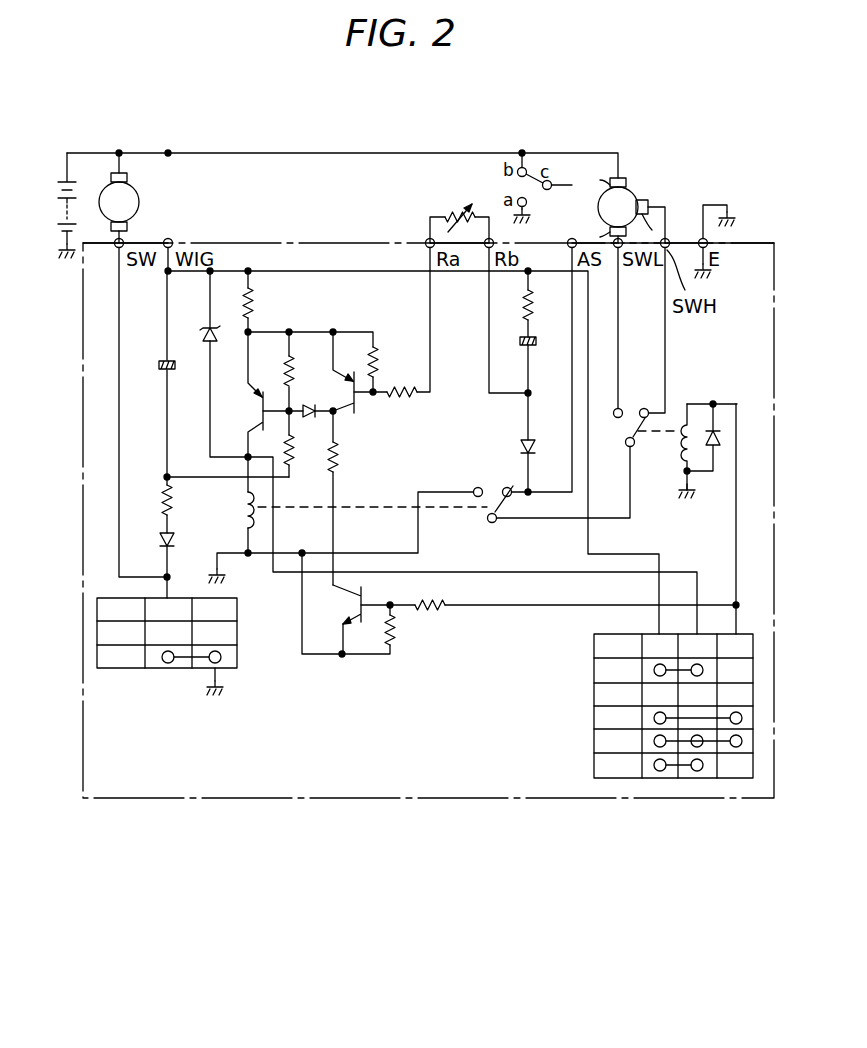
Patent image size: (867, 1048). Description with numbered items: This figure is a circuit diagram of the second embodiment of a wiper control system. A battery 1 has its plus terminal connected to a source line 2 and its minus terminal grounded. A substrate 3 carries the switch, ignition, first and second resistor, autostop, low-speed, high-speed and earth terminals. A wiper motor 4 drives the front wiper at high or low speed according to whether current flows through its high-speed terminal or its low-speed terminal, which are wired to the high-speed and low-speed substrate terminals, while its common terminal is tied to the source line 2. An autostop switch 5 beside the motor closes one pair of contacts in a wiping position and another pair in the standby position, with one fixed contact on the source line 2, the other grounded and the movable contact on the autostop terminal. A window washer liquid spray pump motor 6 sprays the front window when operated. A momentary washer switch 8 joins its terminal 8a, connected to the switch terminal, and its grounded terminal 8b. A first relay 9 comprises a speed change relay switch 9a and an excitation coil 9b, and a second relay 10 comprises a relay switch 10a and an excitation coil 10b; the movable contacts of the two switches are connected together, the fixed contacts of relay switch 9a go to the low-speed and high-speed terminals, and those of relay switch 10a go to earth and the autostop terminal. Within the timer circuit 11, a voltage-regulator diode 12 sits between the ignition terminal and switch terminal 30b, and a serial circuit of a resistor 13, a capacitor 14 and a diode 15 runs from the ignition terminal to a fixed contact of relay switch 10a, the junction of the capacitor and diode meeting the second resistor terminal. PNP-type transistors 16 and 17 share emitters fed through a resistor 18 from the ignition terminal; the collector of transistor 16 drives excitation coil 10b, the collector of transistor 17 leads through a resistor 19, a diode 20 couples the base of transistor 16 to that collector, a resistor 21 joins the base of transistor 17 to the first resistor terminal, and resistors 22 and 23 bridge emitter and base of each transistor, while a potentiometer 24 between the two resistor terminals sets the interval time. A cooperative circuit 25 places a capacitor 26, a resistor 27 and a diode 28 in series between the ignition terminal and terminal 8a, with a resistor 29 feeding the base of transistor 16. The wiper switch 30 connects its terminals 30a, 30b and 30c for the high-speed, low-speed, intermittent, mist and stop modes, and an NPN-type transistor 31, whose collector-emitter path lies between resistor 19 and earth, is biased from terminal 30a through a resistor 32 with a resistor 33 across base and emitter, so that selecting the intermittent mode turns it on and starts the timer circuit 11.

The battery 1 is at (59, 185).
The source line 2 is at (238, 153).
The substrate 3 is at (645, 800).
The wiper motor 4 is at (636, 196).
The autostop switch 5 is at (518, 186).
The window washer liquid spray pump motor 6 is at (137, 196).
The washer switch 8 is at (186, 646).
The terminal of washer switch 8a is at (168, 611).
The terminal of washer switch 8b is at (237, 640).
The first relay 9 is at (657, 442).
The speed change relay switch 9a is at (629, 405).
The excitation coil 9b is at (683, 423).
The second relay 10 is at (455, 512).
The relay switch 10a is at (490, 480).
The excitation coil 10b is at (240, 519).
The timer circuit 11 is at (317, 265).
The voltage-regulator diode 12 is at (202, 335).
The resistor 13 is at (533, 300).
The capacitor 14 is at (537, 343).
The diode 15 is at (535, 450).
The PNP-type transistor 16 is at (258, 412).
The PNP-type transistor 17 is at (358, 405).
The resistor 18 is at (254, 300).
The resistor 19 is at (338, 462).
The diode 20 is at (303, 408).
The resistor 21 is at (400, 400).
The resistor 22 is at (286, 374).
The resistor 23 is at (378, 360).
The potentiometer 24 is at (458, 204).
The cooperative circuit 25 is at (164, 340).
The capacitor 26 is at (163, 374).
The resistor 27 is at (162, 500).
The diode 28 is at (161, 535).
The resistor 29 is at (294, 460).
The wiper switch 30 is at (650, 706).
The terminal of wiper switch 30a is at (735, 648).
The terminal of wiper switch 30b is at (697, 648).
The terminal of wiper switch 30c is at (660, 648).
The NPN-type transistor 31 is at (351, 607).
The resistor 32 is at (432, 612).
The resistor 33 is at (395, 635).